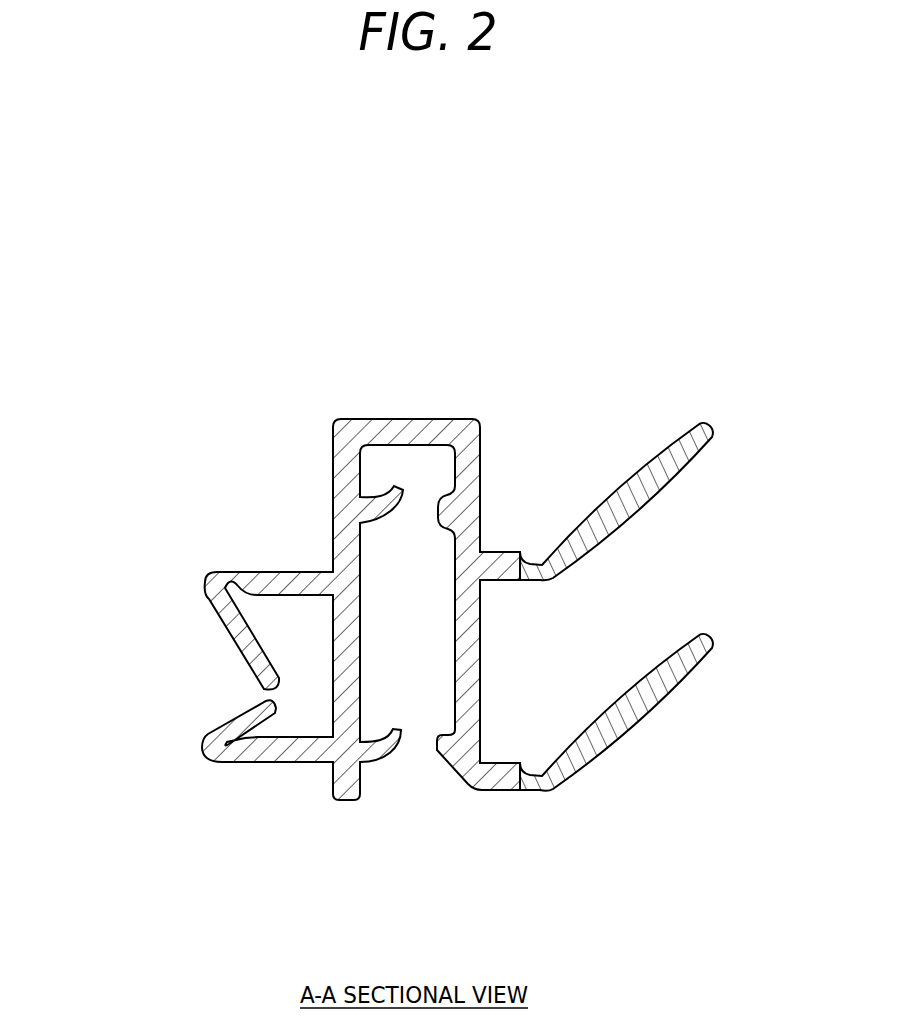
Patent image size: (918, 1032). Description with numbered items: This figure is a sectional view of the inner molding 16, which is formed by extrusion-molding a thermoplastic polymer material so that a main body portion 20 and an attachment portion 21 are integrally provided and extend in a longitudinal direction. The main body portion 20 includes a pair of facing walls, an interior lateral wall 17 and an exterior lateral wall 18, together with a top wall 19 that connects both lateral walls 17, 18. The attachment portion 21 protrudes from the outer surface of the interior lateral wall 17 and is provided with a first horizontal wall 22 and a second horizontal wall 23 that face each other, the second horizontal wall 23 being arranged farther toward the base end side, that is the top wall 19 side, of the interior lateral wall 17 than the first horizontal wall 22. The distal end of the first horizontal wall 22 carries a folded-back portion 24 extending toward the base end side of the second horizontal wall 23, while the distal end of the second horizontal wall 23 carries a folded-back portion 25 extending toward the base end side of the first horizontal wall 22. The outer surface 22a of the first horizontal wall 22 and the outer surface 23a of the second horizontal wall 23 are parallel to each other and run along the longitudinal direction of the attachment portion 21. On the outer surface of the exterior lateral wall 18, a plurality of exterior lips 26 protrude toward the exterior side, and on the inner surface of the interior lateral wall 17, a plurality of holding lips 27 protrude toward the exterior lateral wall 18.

The inner molding 16 is at (363, 419).
The interior lateral wall 17 is at (347, 480).
The exterior lateral wall 18 is at (468, 507).
The top wall 19 is at (410, 426).
The main body portion 20 is at (452, 418).
The attachment portion 21 is at (225, 765).
The first horizontal wall 22 is at (247, 762).
The outer surface of the first horizontal wall 22a is at (287, 762).
The second horizontal wall 23 is at (258, 583).
The outer surface of the second horizontal wall 23a is at (295, 567).
The folded-back portion 24 is at (237, 718).
The folded-back portion 25 is at (237, 652).
The exterior lips 26 is at (707, 455).
The holding lips 27 is at (403, 490).